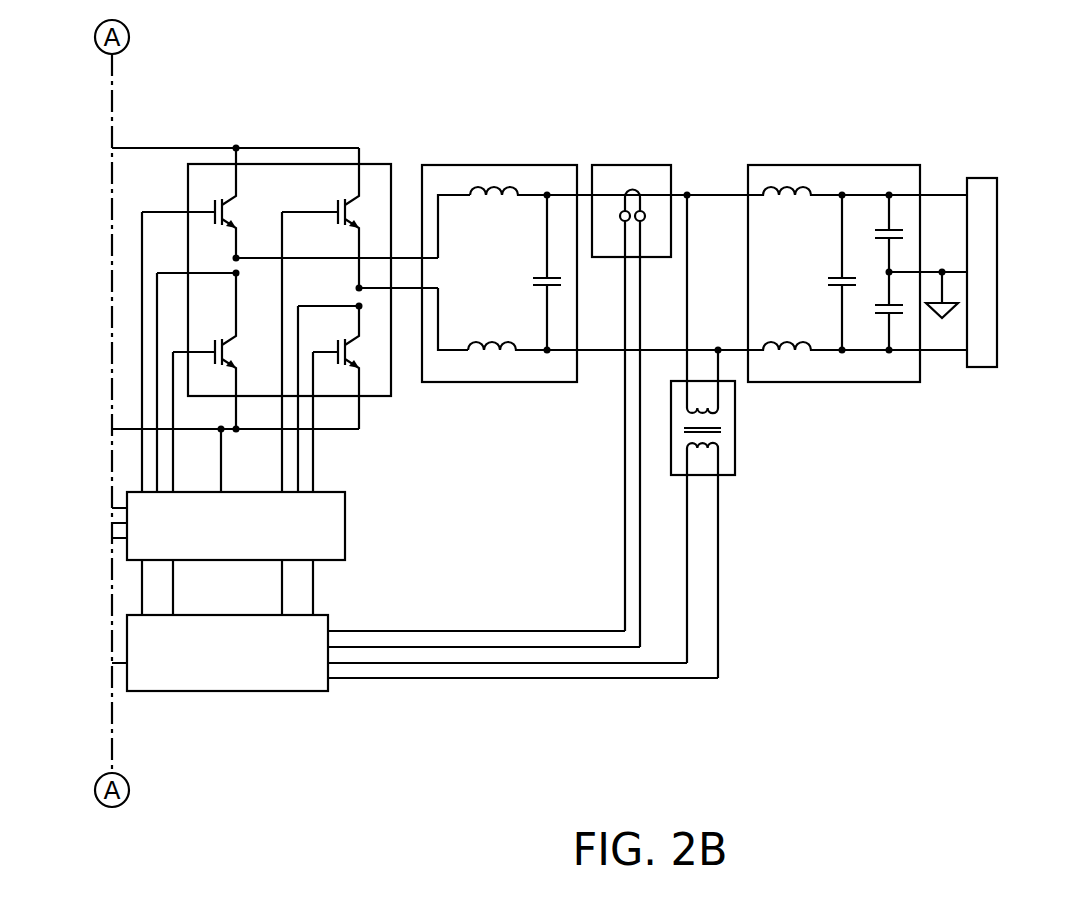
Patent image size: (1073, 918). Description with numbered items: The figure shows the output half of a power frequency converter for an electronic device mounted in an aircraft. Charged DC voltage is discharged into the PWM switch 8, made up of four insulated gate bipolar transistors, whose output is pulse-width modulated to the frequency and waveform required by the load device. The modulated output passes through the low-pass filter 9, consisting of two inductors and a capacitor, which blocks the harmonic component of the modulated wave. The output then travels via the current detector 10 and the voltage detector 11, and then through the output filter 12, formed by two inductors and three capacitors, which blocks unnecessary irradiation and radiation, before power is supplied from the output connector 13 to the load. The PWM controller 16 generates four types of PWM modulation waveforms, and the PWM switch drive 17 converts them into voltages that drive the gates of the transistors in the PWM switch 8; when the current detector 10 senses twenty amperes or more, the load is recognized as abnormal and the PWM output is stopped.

The PWM switch 8 is at (318, 185).
The low-pass filter 9 is at (535, 176).
The current detector 10 is at (658, 176).
The voltage detector 11 is at (728, 455).
The output filter 12 is at (882, 178).
The output connector 13 is at (997, 191).
The PWM controller 16 is at (315, 643).
The PWM switch drive 17 is at (338, 518).